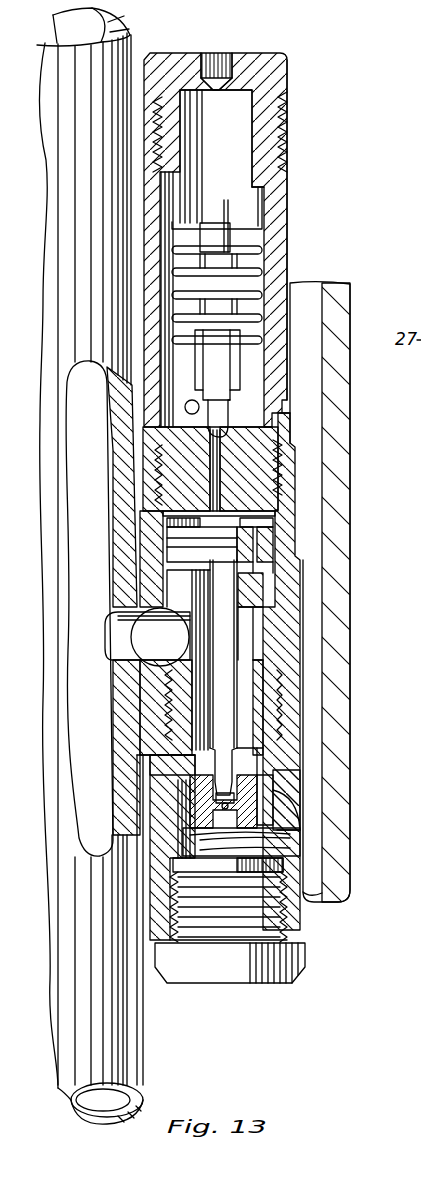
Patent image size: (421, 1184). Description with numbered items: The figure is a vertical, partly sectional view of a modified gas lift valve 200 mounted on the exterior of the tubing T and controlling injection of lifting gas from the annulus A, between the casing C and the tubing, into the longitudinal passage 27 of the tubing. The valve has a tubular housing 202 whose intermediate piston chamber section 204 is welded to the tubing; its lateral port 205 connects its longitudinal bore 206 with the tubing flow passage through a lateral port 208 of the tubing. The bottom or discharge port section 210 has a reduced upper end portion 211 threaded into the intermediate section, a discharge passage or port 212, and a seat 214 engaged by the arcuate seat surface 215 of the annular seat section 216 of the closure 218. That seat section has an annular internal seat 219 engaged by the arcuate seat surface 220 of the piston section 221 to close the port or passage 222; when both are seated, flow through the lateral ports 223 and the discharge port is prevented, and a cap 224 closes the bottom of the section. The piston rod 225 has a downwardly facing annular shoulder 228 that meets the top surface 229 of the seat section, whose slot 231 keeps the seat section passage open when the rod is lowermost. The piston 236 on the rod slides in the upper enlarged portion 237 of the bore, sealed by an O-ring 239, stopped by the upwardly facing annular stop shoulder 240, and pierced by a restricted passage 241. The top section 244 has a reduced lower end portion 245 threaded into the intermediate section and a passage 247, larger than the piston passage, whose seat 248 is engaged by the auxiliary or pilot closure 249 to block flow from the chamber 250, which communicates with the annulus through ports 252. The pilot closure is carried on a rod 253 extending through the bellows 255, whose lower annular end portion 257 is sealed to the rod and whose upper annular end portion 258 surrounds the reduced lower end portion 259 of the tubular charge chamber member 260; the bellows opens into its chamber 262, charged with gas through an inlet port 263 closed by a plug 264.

The tubing T is at (132, 44).
The annulus A is at (312, 296).
The casing C is at (351, 316).
The longitudinal passage 27 is at (76, 417).
The gas lift valve 200 is at (300, 228).
The tubular housing 202 is at (296, 152).
The intermediate piston chamber section 204 is at (283, 607).
The lateral port 205 is at (140, 647).
The longitudinal bore 206 is at (252, 632).
The lateral port of the tubing 208 is at (107, 632).
The bottom or discharge port section 210 is at (283, 858).
The reduced upper end portion 211 is at (268, 697).
The discharge passage or port 212 is at (248, 683).
The seat 214 is at (248, 770).
The arcuate seat surface 215 is at (260, 755).
The annular seat section 216 is at (262, 808).
The closure 218 is at (265, 845).
The annular internal seat 219 is at (270, 780).
The arcuate seat surface 220 is at (200, 805).
The piston section 221 is at (282, 820).
The port or passage 222 is at (240, 748).
The lateral ports 223 is at (268, 792).
The cap 224 is at (255, 832).
The piston rod 225 is at (267, 578).
The downwardly facing annular shoulder 228 is at (205, 770).
The top surface 229 is at (195, 785).
The slot 231 is at (210, 790).
The piston 236 is at (275, 512).
The upper enlarged portion 237 is at (277, 562).
The O-ring 239 is at (268, 533).
The upwardly facing annular stop shoulder 240 is at (168, 593).
The passage 241 is at (273, 545).
The top section 244 is at (289, 280).
The reduced lower end portion 245 is at (177, 465).
The passage 247 is at (220, 478).
The seat 248 is at (210, 434).
The auxiliary or pilot closure 249 is at (210, 417).
The chamber 250 is at (256, 370).
The ports 252 is at (290, 410).
The rod 253 is at (216, 230).
The bellows 255 is at (266, 250).
The lower annular end portion 257 is at (249, 368).
The upper annular end portion 258 is at (261, 214).
The reduced lower end portion 259 is at (267, 187).
The tubular charge chamber member 260 is at (255, 117).
The chamber 262 is at (247, 98).
The inlet port 263 is at (233, 80).
The plug 264 is at (234, 54).